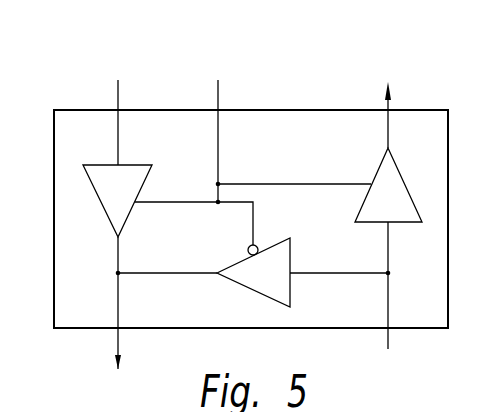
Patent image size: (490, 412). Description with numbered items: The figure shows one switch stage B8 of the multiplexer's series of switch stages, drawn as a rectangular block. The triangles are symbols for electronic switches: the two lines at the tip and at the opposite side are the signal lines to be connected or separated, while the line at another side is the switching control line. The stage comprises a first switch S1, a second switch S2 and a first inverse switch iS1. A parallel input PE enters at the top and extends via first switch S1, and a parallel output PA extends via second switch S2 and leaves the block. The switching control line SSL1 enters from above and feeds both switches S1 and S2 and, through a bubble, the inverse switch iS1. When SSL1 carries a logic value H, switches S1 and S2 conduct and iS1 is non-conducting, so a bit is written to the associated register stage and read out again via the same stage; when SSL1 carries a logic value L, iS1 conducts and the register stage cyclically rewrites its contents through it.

The switch stage B8 is at (80, 83).
The parallel input PE is at (129, 213).
The switching control line SSL1 is at (253, 146).
The parallel output PA is at (389, 213).
The first switch S1 is at (107, 201).
The second switch S2 is at (396, 185).
The first inverse switch iS1 is at (253, 277).